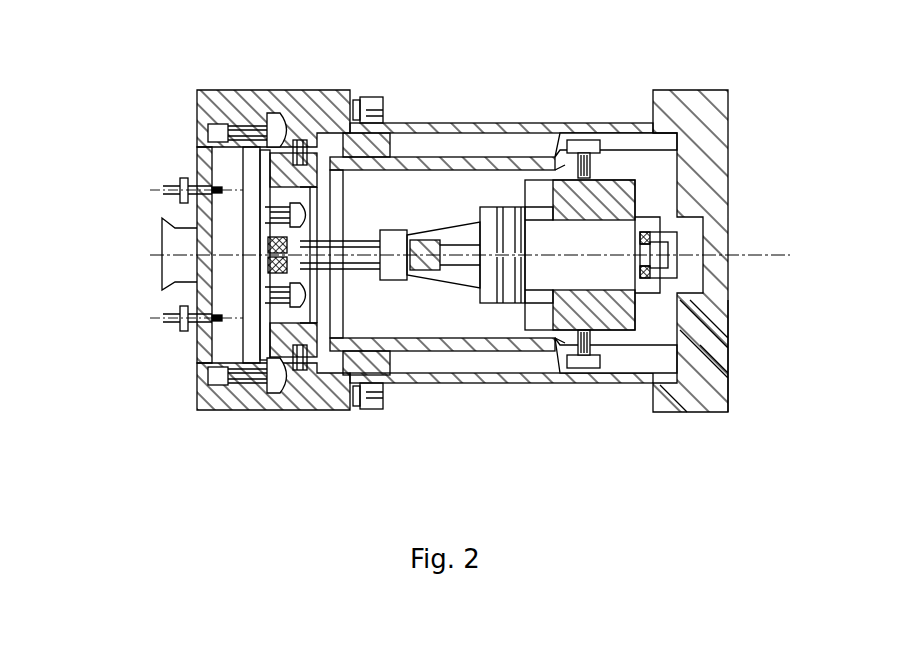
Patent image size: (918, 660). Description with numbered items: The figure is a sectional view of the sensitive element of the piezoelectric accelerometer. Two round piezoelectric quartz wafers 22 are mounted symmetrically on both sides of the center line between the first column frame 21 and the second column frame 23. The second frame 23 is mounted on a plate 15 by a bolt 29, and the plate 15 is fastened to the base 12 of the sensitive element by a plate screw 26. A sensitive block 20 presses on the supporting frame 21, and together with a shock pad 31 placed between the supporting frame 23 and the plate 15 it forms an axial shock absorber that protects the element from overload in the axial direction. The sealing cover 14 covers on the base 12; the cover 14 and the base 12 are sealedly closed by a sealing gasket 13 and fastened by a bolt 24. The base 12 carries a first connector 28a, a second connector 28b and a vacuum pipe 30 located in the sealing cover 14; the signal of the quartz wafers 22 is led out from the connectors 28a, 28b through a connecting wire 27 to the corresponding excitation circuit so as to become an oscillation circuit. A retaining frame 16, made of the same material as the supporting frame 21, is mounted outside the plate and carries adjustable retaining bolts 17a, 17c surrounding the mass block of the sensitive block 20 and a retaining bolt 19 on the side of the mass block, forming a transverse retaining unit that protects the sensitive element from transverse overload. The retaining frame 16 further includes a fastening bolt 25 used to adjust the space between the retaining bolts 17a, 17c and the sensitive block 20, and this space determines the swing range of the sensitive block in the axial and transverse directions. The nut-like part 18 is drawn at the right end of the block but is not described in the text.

The base 12 is at (222, 397).
The sealing gasket 13 is at (307, 328).
The sealing cover 14 is at (345, 372).
The plate 15 is at (305, 352).
The retaining frame 16 is at (443, 345).
The retaining bolt 17a is at (595, 147).
The retaining bolt 17c is at (583, 370).
The nut 18 is at (627, 267).
The retaining bolt 19 is at (817, 377).
The sensitive block 20 is at (727, 93).
The first column frame 21 is at (490, 195).
The piezoelectric quartz wafer 22 is at (390, 228).
The second column frame 23 is at (372, 160).
The bolt 24 is at (375, 103).
The fastening bolt 25 is at (292, 172).
The plate screw 26 is at (240, 195).
The connecting wire 27 is at (310, 220).
The first connector 28a is at (182, 175).
The second connector 28b is at (177, 325).
The bolt 29 is at (187, 208).
The vacuum pipe 30 is at (177, 275).
The shock pad 31 is at (187, 293).